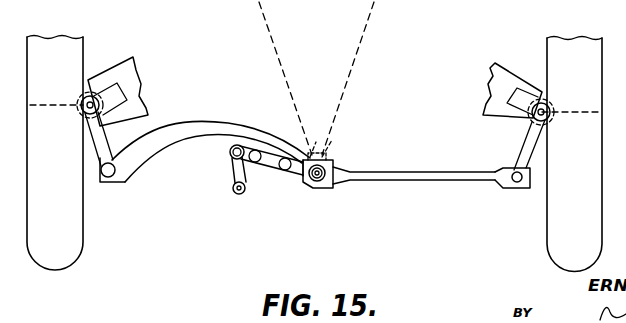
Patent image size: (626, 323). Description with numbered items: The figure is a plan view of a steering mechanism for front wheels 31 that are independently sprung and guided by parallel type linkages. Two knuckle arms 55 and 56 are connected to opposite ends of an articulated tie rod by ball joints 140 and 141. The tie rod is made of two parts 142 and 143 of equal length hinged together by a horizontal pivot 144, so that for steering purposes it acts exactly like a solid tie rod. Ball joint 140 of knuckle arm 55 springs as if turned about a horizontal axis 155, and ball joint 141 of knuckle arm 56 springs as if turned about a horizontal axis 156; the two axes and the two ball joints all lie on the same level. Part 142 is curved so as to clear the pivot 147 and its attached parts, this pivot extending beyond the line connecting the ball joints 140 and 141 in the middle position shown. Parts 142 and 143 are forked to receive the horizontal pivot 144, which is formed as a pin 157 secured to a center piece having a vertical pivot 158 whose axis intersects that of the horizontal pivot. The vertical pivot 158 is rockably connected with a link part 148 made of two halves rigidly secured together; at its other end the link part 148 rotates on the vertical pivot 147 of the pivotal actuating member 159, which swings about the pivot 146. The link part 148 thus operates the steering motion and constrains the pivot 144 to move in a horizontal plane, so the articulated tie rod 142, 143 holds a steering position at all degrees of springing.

The front wheel 31 is at (72, 236).
The knuckle arm 55 is at (100, 142).
The knuckle arm 56 is at (529, 143).
The ball joint 140 is at (108, 180).
The ball joint 141 is at (517, 185).
The tie rod part 142 is at (227, 127).
The tie rod part 143 is at (428, 172).
The horizontal pivot 144 is at (323, 137).
The vertical axis 146 is at (236, 194).
The vertical pivot 147 is at (229, 153).
The link part 148 is at (266, 165).
The horizontal axis 155 is at (283, 73).
The horizontal axis 156 is at (348, 87).
The pin 157 is at (323, 188).
The vertical pivot 158 is at (308, 183).
The pivotal actuating member 159 is at (231, 173).